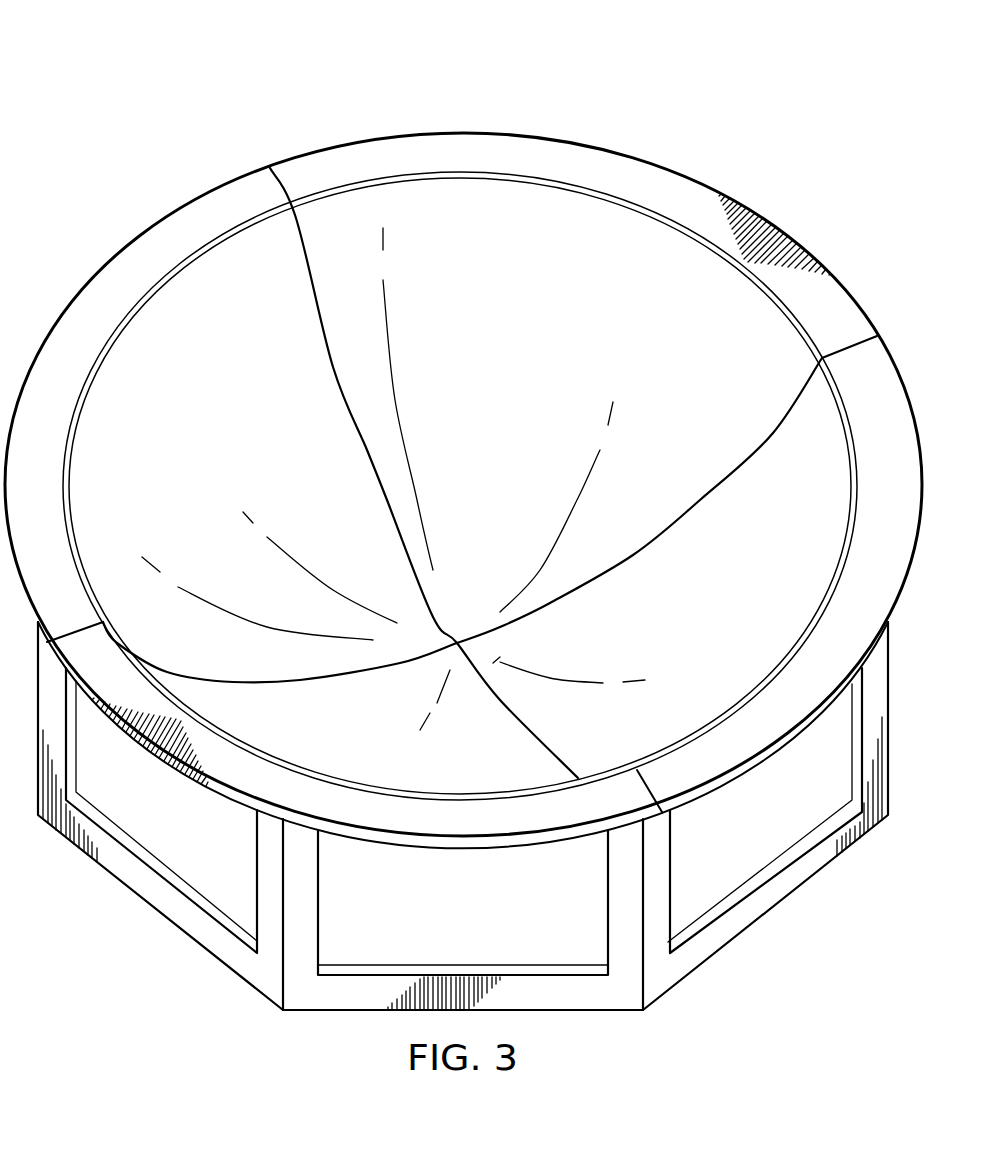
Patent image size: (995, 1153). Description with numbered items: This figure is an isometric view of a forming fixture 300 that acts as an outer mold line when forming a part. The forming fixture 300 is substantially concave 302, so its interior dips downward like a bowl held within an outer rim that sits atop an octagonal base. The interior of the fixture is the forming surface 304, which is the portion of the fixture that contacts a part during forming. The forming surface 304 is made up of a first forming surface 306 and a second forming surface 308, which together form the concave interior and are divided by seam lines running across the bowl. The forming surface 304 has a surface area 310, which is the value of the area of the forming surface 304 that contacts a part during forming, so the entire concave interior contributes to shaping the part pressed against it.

The forming fixture 300 is at (265, 66).
The concave 302 is at (522, 195).
The forming surface 304 is at (178, 318).
The first forming surface 306 is at (637, 210).
The second forming surface 308 is at (683, 398).
The surface area 310 is at (634, 560).